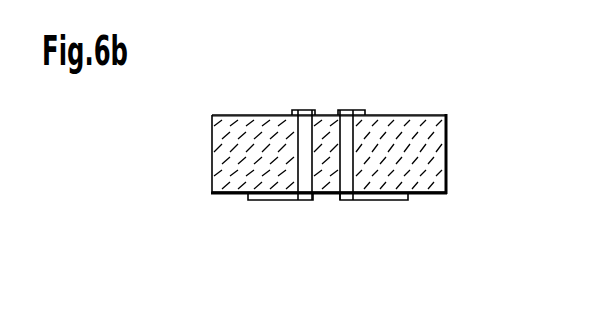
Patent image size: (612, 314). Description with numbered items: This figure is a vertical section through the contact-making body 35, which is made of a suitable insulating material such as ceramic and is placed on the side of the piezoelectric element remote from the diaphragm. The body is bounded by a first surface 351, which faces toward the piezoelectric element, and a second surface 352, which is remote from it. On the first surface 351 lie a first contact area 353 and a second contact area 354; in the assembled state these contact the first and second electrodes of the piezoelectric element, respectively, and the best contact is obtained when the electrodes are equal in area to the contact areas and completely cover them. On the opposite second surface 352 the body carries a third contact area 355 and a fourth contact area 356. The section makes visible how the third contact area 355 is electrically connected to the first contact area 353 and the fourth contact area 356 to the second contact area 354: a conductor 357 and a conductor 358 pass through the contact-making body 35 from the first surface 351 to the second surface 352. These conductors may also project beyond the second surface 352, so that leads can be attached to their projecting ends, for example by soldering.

The contact-making body 35 is at (222, 160).
The first surface 351 is at (226, 195).
The second surface 352 is at (260, 112).
The first contact area 353 is at (284, 196).
The second contact area 354 is at (392, 200).
The third contact area 355 is at (306, 110).
The fourth contact area 356 is at (355, 112).
The conductor 357 is at (303, 140).
The conductor 358 is at (353, 133).